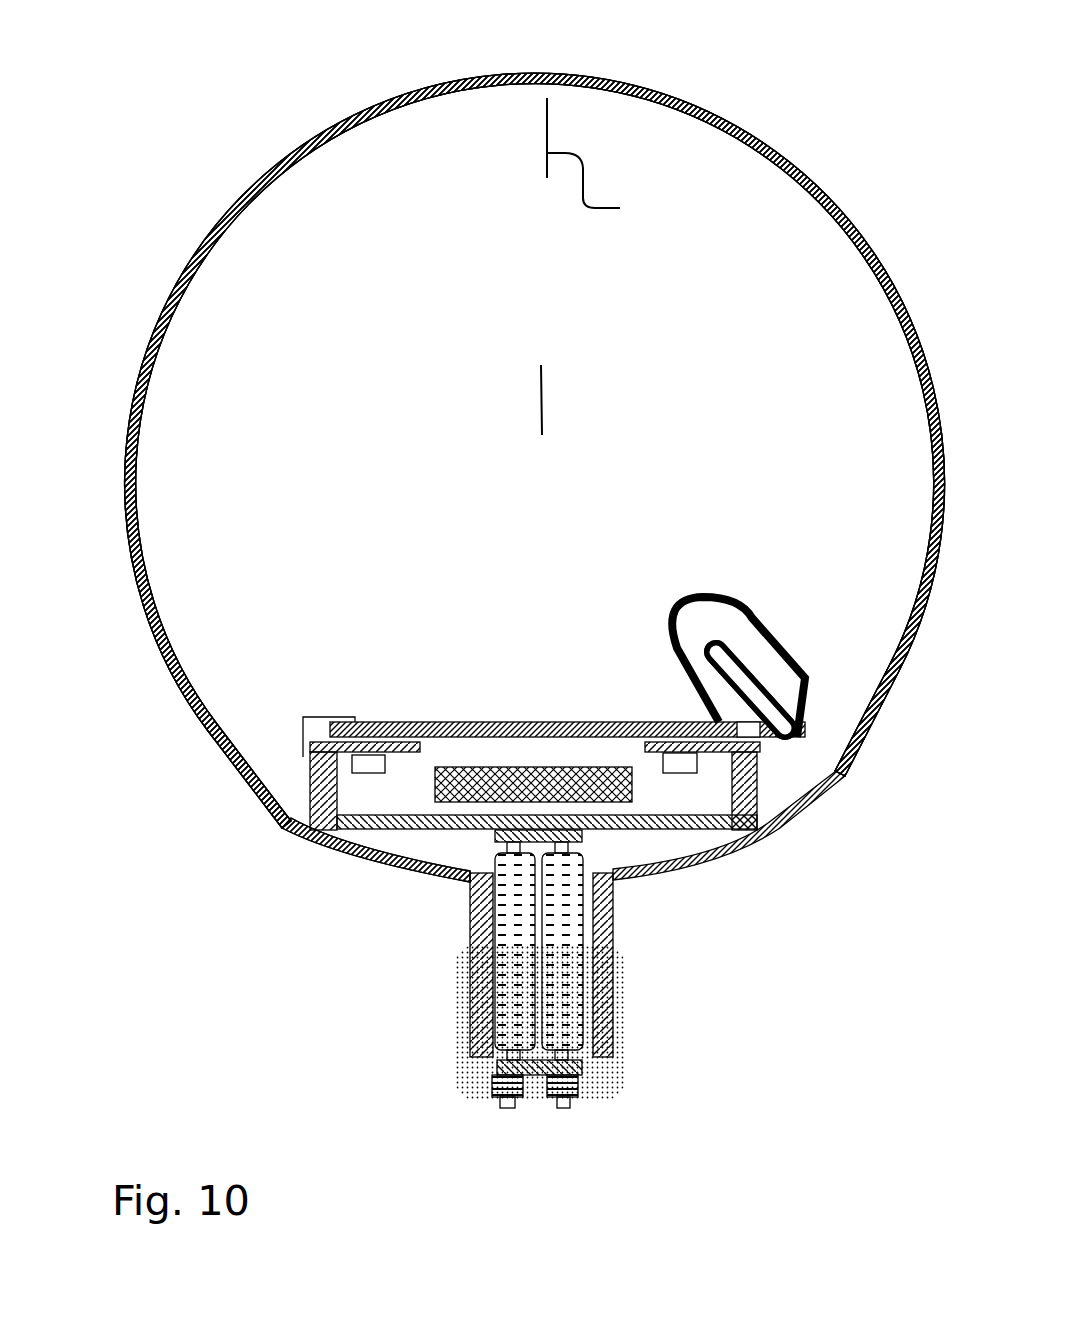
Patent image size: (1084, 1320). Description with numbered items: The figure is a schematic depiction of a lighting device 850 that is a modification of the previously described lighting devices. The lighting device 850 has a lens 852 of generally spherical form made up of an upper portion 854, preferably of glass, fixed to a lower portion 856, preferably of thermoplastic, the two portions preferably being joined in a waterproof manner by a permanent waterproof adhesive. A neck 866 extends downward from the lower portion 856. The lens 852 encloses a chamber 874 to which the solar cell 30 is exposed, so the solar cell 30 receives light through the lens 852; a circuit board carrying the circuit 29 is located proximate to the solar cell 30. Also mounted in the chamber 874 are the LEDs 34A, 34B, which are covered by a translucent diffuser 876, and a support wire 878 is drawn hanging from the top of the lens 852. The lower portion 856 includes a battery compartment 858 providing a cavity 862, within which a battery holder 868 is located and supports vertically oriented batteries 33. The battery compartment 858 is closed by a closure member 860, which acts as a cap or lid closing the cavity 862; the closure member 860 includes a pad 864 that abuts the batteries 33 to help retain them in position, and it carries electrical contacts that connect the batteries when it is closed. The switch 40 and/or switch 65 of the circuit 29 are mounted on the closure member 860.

The lighting device 850 is at (218, 93).
The lens 852 is at (815, 185).
The chamber 874 is at (250, 258).
The support wire 878 is at (622, 166).
The solar cell 30 is at (470, 716).
The circuit 29 is at (578, 778).
The translucent diffuser 876 is at (735, 582).
The LED 34A is at (725, 648).
The LED 34B is at (794, 671).
The upper portion 854 is at (195, 748).
The lower portion 856 is at (282, 828).
The battery compartment 858 is at (598, 866).
The closure member 860 is at (445, 1045).
The cavity 862 is at (437, 840).
The pad 864 is at (492, 842).
The neck 866 is at (628, 908).
The batteries 33 is at (515, 1000).
The battery holder 868 is at (585, 1070).
The switch 65 is at (505, 1100).
The switch 40 is at (590, 1105).